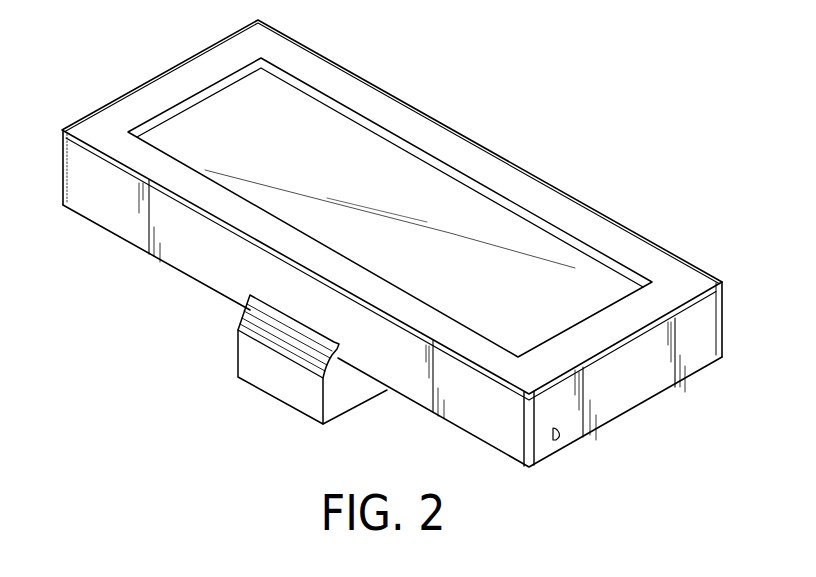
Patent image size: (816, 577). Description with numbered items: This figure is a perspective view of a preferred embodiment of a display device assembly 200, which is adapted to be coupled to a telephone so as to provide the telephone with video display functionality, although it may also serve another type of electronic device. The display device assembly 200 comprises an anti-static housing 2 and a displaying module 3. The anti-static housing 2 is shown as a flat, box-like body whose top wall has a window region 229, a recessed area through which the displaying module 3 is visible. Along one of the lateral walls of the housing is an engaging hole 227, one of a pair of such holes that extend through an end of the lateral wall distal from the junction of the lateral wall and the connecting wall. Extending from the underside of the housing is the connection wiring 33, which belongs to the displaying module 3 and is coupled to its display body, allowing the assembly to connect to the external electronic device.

The display device assembly 200 is at (392, 240).
The anti-static housing 2 is at (553, 204).
The displaying module 3 is at (293, 122).
The window region 229 is at (383, 168).
The engaging hole 227 is at (560, 434).
The connection wiring 33 is at (293, 408).